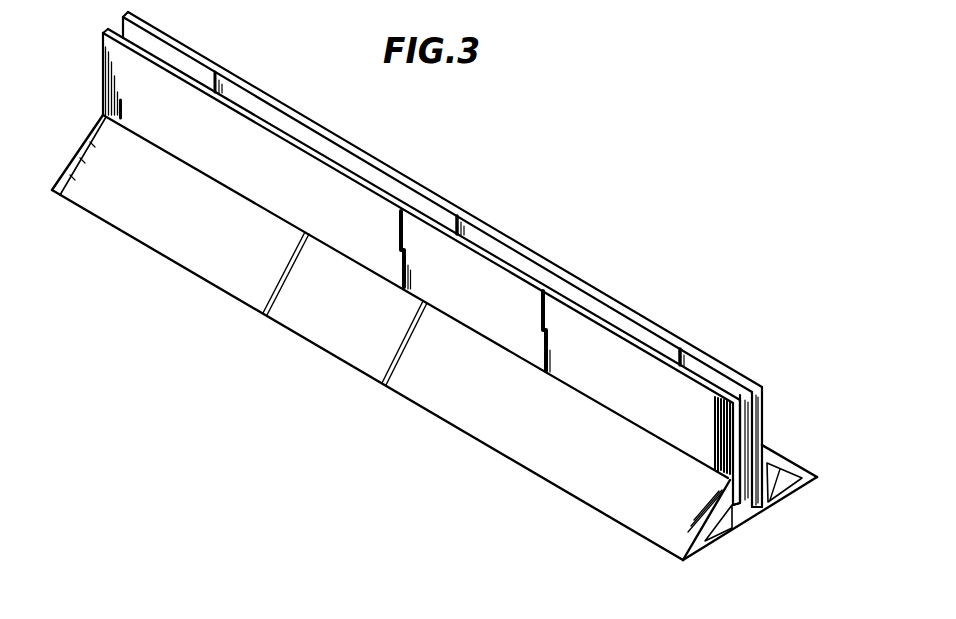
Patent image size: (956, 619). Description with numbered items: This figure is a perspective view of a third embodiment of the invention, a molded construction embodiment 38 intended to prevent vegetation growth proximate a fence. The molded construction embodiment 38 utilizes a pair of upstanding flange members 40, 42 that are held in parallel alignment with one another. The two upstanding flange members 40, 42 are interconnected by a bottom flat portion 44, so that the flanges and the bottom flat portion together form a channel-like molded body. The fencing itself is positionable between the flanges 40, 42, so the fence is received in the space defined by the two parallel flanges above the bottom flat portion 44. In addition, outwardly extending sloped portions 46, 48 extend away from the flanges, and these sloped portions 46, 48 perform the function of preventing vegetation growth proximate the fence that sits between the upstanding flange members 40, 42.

The molded construction embodiment 38 is at (553, 215).
The upstanding flange member 40 is at (593, 313).
The upstanding flange member 42 is at (668, 333).
The bottom flat portion 44 is at (762, 537).
The outwardly extending sloped portion 46 is at (607, 503).
The outwardly extending sloped portion 48 is at (778, 455).